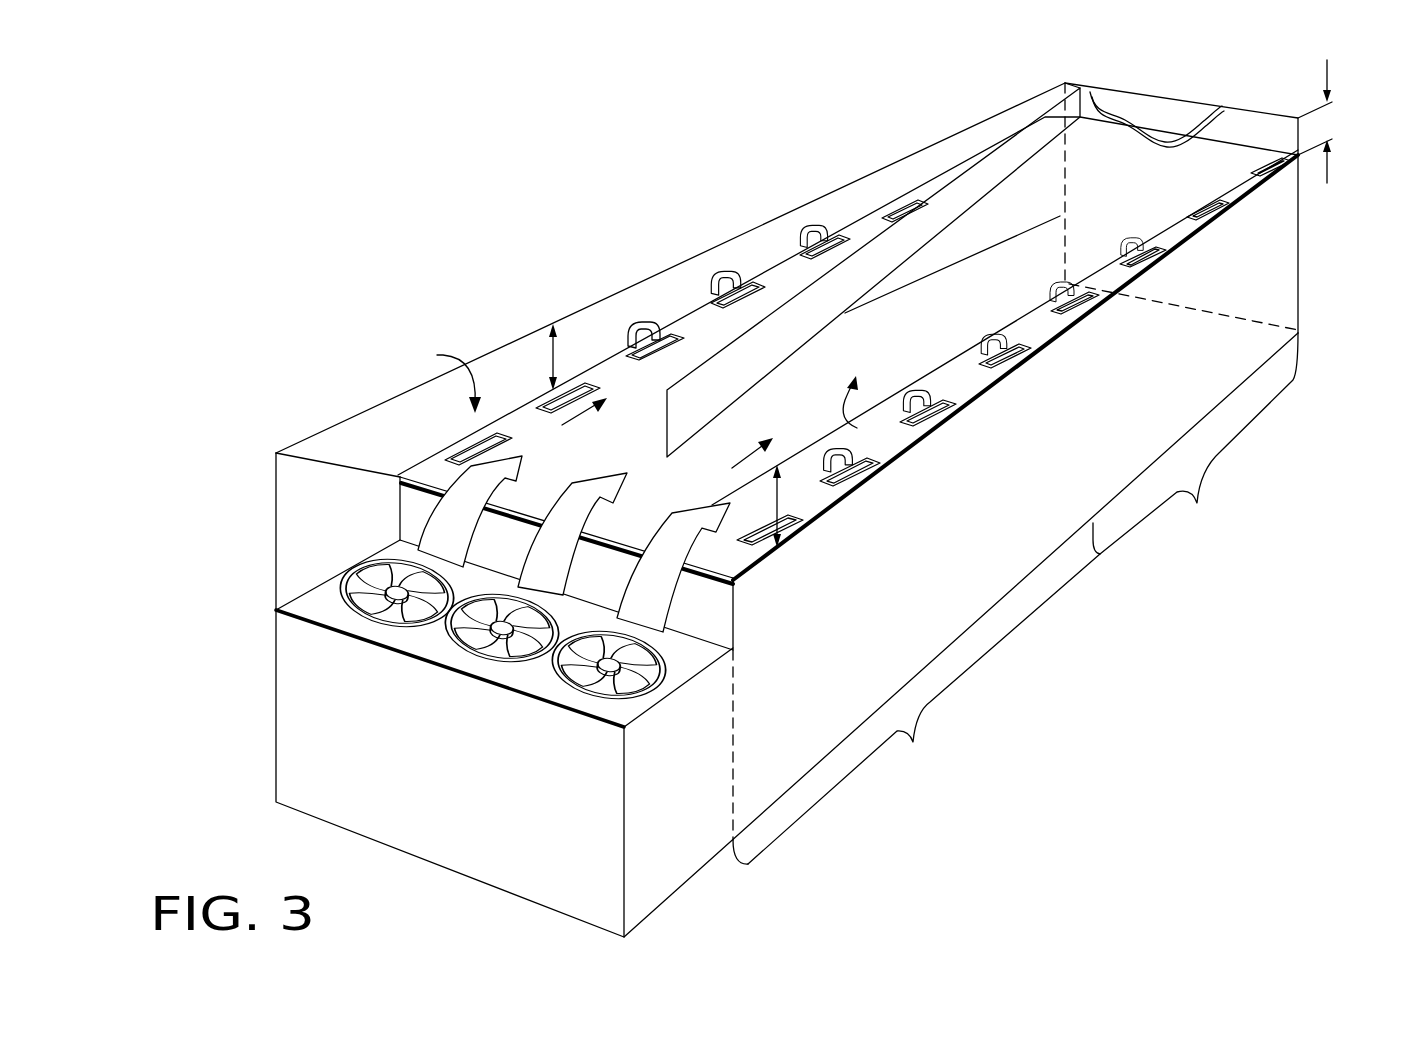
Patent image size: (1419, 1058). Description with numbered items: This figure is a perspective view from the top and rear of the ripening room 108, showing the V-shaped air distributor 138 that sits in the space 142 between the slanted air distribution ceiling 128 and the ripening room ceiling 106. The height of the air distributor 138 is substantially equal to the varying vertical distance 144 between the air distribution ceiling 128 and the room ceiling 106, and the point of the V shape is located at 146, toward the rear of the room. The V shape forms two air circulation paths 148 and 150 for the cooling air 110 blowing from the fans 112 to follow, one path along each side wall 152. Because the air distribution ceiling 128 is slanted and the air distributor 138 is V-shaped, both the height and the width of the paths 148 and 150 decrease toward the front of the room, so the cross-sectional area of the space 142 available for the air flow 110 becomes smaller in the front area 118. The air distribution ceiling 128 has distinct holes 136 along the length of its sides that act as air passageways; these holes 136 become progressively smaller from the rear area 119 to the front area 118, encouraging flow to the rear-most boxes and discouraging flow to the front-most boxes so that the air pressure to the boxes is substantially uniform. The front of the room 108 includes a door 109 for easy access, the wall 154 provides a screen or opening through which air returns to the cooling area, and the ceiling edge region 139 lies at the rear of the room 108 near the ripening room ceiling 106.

The ripening room ceiling 106 is at (1165, 108).
The ripening room 108 is at (1274, 497).
The door 109 is at (1288, 247).
The cooling air 110 is at (440, 531).
The fans 112 is at (562, 672).
The front area 118 is at (1195, 443).
The rear area 119 is at (924, 709).
The air distribution ceiling 128 is at (640, 447).
The holes 136 is at (903, 203).
The V-shaped air distributor 138 is at (1002, 270).
The rear lip 139 is at (1207, 168).
The space 142 is at (650, 397).
The vertical distance 144 is at (545, 360).
The point of the V shape 146 is at (662, 434).
The air circulation path 148 is at (726, 465).
The air circulation path 150 is at (560, 426).
The side wall 152 is at (395, 434).
The wall 154 is at (733, 703).